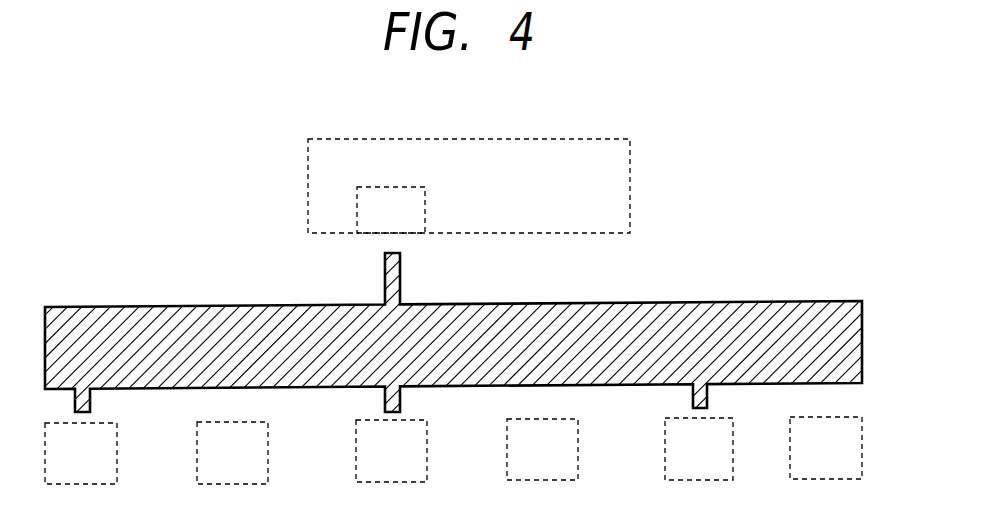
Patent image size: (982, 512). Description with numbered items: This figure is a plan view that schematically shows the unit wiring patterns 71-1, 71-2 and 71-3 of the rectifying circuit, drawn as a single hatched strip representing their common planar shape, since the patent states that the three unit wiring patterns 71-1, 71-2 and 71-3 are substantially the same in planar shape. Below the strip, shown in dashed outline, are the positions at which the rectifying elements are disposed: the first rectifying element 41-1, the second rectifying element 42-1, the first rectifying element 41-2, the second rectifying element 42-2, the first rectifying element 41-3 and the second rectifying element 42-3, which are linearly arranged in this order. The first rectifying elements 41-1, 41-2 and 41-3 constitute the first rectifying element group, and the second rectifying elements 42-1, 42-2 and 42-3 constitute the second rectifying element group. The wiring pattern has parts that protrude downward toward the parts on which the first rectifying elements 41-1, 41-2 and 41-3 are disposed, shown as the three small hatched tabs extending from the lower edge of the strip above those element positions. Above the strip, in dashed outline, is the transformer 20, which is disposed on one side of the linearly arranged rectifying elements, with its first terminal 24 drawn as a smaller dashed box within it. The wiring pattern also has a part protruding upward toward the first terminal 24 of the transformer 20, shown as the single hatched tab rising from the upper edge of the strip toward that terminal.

The transformer 20 is at (630, 162).
The first terminal 24 is at (407, 187).
The unit wiring pattern 71-1 is at (491, 330).
The unit wiring pattern 71-2 is at (491, 330).
The unit wiring pattern 71-3 is at (753, 283).
The first rectifying element 41-1 is at (81, 453).
The second rectifying element 42-1 is at (232, 453).
The first rectifying element 41-2 is at (391, 451).
The second rectifying element 42-2 is at (542, 449).
The first rectifying element 41-3 is at (699, 449).
The second rectifying element 42-3 is at (826, 448).